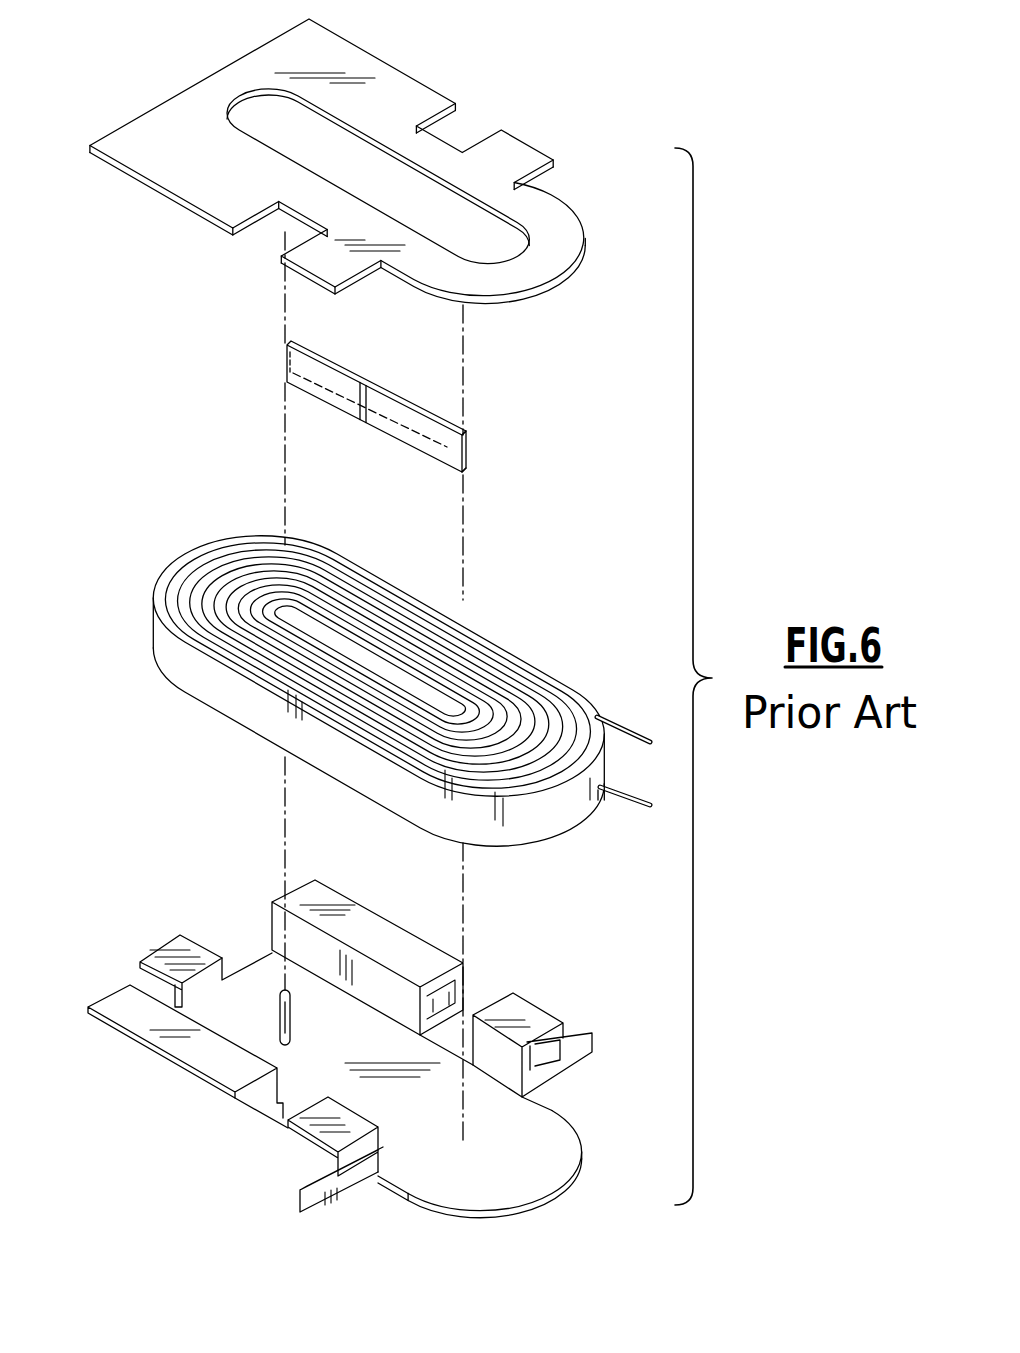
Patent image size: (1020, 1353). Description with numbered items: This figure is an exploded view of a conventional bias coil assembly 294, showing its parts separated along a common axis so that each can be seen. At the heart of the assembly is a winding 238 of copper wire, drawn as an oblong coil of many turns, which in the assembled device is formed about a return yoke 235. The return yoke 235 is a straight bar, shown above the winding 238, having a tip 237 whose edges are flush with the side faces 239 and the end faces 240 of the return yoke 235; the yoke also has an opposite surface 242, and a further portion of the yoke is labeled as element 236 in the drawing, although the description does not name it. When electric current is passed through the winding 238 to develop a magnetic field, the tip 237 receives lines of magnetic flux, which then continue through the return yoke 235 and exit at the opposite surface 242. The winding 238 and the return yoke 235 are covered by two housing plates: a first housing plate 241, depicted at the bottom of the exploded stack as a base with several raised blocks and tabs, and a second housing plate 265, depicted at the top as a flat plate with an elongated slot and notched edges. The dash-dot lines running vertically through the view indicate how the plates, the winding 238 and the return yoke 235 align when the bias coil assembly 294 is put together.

The bias coil assembly 294 is at (568, 98).
The second housing plate 265 is at (180, 92).
The return yoke 235 is at (478, 409).
The tip 237 is at (287, 344).
The opposite surface 242 is at (297, 390).
The side faces 239 is at (433, 443).
The magnet end 236 is at (463, 437).
The end faces 240 is at (463, 470).
The winding 238 is at (163, 618).
The first housing plate 241 is at (153, 948).